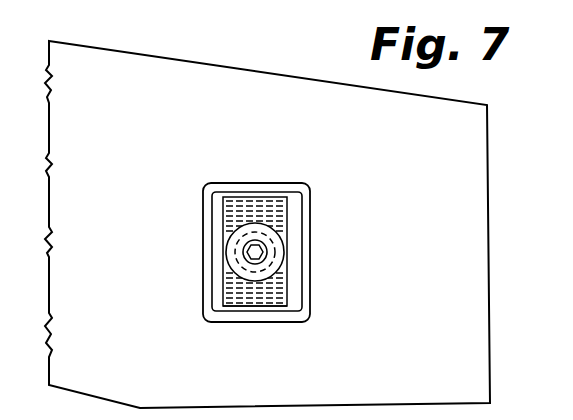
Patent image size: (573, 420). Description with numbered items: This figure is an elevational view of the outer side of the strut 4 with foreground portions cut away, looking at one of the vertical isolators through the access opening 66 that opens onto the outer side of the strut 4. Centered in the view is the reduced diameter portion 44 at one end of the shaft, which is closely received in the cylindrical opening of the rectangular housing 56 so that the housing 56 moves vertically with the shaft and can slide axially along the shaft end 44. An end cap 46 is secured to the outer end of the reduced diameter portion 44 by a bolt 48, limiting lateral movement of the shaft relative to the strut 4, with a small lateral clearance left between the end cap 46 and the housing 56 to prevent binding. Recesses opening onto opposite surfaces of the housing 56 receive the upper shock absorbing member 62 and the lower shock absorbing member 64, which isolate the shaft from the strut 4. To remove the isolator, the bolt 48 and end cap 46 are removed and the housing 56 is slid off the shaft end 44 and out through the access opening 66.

The strut 4 is at (438, 203).
The reduced diameter portion 44 is at (231, 243).
The end cap 46 is at (284, 236).
The bolt 48 is at (262, 253).
The rectangular housing 56 is at (217, 273).
The upper shock absorbing member 62 is at (277, 192).
The lower shock absorbing member 64 is at (228, 310).
The access opening 66 is at (294, 305).